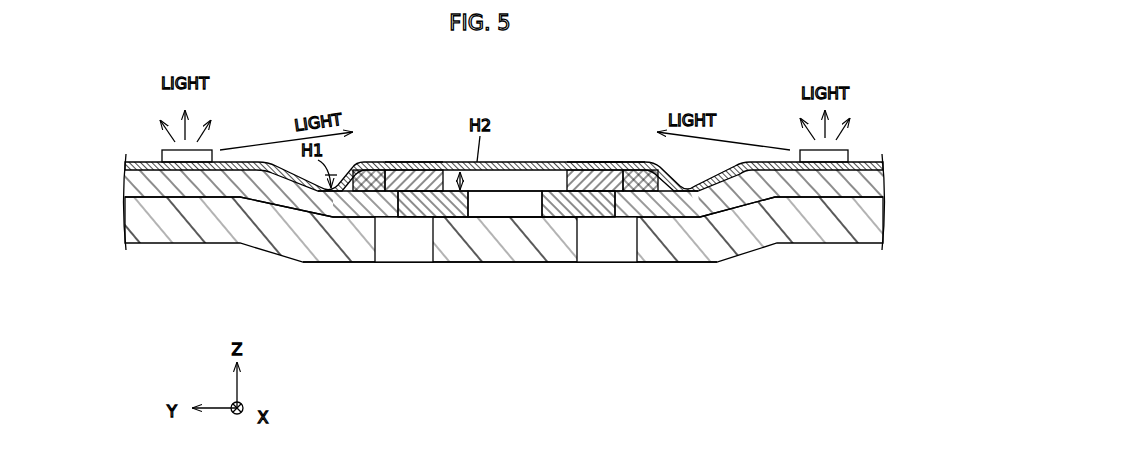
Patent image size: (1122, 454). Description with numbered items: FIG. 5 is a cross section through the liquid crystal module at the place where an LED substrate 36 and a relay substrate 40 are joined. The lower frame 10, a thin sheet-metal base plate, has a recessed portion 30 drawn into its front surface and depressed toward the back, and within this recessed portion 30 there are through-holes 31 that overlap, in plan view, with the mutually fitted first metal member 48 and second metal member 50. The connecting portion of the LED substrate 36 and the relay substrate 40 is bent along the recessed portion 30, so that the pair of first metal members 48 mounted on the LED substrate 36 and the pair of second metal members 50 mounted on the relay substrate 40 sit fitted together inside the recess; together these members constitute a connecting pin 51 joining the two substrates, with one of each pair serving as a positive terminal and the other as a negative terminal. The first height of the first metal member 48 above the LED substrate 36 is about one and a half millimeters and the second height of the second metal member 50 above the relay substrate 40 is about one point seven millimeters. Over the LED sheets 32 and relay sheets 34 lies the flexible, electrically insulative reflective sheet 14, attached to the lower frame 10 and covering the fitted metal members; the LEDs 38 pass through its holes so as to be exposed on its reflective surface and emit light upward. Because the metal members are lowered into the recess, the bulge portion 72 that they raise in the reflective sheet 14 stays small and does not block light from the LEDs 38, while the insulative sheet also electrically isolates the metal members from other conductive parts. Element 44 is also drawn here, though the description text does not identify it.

The lower frame 10 is at (807, 220).
The reflective sheet 14 is at (508, 160).
The recessed portion 30 is at (662, 248).
The through-hole 31 is at (376, 243).
The LED sheet 32 is at (137, 185).
The relay sheet 34 is at (445, 205).
The LED substrate 36 is at (338, 207).
The LED 38 is at (212, 150).
The relay substrate 40 is at (568, 200).
The light-emitting layer 44 is at (542, 200).
The first metal member 48 is at (378, 170).
The second metal member 50 is at (421, 170).
The connecting pin 51 is at (402, 158).
The bulge portion 72 is at (596, 160).